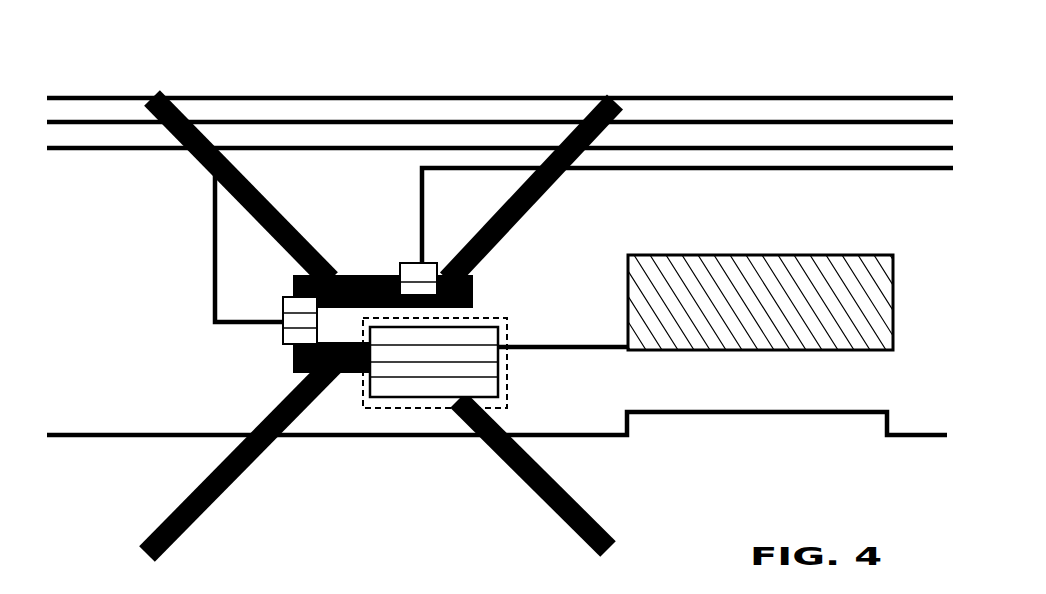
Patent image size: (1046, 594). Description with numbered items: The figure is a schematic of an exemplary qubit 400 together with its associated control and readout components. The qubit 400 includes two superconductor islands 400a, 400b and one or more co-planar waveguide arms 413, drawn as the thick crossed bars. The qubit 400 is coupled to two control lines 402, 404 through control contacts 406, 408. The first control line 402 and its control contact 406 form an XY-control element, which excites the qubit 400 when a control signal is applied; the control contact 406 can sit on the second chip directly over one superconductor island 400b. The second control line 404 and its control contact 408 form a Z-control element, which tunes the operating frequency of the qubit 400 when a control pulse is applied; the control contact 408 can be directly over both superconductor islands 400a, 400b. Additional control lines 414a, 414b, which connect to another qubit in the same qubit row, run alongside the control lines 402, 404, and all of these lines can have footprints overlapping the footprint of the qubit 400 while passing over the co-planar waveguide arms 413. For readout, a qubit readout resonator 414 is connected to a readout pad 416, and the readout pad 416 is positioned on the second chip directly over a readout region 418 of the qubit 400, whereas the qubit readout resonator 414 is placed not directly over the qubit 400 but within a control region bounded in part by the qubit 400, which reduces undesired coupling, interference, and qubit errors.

The qubit 400 is at (556, 546).
The superconductor island 400a is at (248, 470).
The superconductor island 400b is at (273, 202).
The first control line 402 is at (672, 171).
The second control line 404 is at (828, 150).
The control contact 406 is at (412, 275).
The control contact 408 is at (288, 341).
The co-planar waveguide arms 413 is at (370, 189).
The qubit readout resonator 414 is at (770, 255).
The control line 414a is at (683, 96).
The control line 414b is at (806, 122).
The readout pad 416 is at (494, 367).
The readout region 418 is at (508, 318).